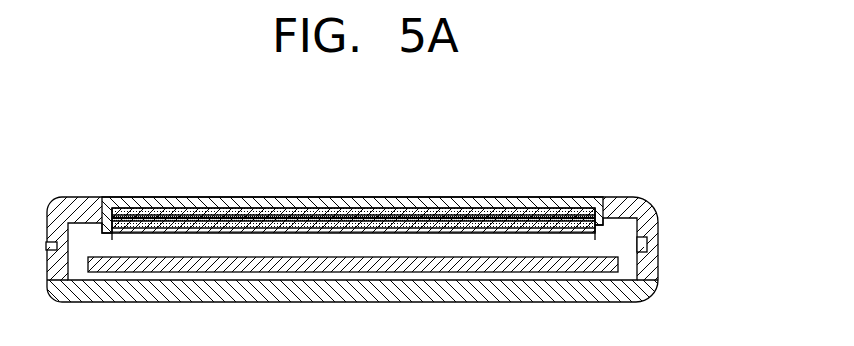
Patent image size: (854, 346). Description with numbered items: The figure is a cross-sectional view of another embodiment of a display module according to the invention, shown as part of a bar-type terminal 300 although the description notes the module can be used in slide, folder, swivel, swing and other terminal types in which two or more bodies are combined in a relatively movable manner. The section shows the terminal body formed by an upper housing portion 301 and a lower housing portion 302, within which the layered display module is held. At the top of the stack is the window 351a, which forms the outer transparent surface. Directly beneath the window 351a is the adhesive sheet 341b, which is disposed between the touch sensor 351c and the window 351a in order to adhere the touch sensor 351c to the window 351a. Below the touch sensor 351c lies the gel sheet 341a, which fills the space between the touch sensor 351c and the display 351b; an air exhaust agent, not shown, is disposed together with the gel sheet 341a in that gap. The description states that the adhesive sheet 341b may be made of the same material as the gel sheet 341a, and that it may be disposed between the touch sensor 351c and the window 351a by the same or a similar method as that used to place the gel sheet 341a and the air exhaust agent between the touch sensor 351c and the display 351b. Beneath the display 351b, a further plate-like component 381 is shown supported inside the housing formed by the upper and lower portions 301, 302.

The display device 300 is at (655, 166).
The upper housing 301 is at (656, 229).
The lower housing 302 is at (656, 265).
The window 351a is at (178, 213).
The adhesive sheet 341b is at (228, 218).
The touch sensor 351c is at (280, 224).
The gel sheet 341a is at (332, 232).
The display 351b is at (398, 240).
The circuit board 381 is at (480, 265).